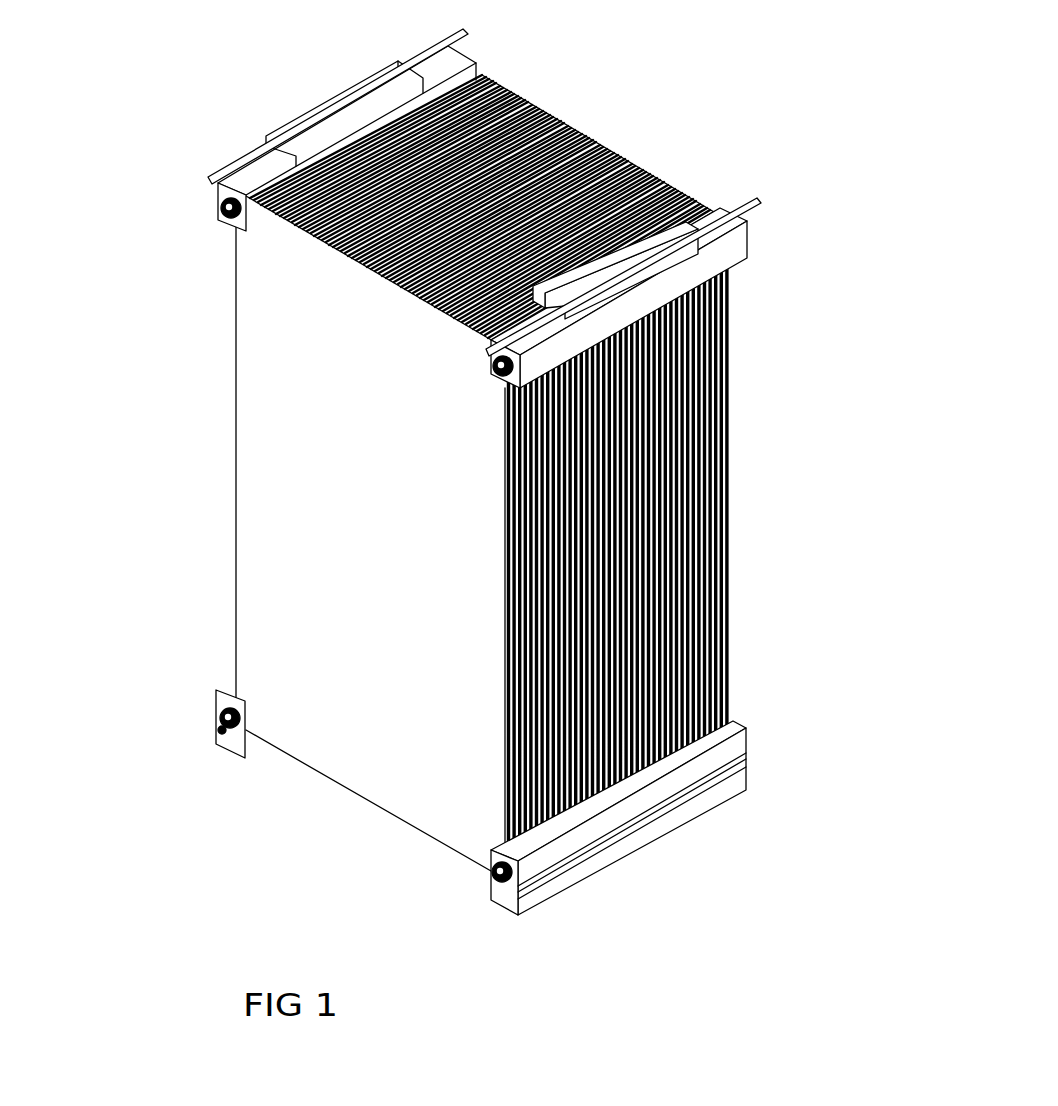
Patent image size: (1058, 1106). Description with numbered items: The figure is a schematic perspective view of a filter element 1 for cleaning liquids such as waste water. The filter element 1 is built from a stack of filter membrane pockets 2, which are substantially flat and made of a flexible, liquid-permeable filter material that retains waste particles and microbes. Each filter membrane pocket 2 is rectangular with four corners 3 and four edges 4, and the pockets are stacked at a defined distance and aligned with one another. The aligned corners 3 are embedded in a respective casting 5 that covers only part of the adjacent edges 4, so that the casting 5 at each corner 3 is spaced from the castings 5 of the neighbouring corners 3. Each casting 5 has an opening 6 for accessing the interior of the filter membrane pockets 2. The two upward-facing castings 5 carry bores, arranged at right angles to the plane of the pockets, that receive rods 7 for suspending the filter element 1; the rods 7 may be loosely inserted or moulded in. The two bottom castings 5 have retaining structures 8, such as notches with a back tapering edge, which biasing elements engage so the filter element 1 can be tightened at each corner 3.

The filter element 1 is at (488, 464).
The filter membrane pocket 2 is at (362, 135).
The corner 3 is at (241, 226).
The edge 4 is at (392, 280).
The casting 5 is at (293, 116).
The opening 6 is at (216, 201).
The rod 7 is at (427, 42).
The retaining structure 8 is at (211, 724).